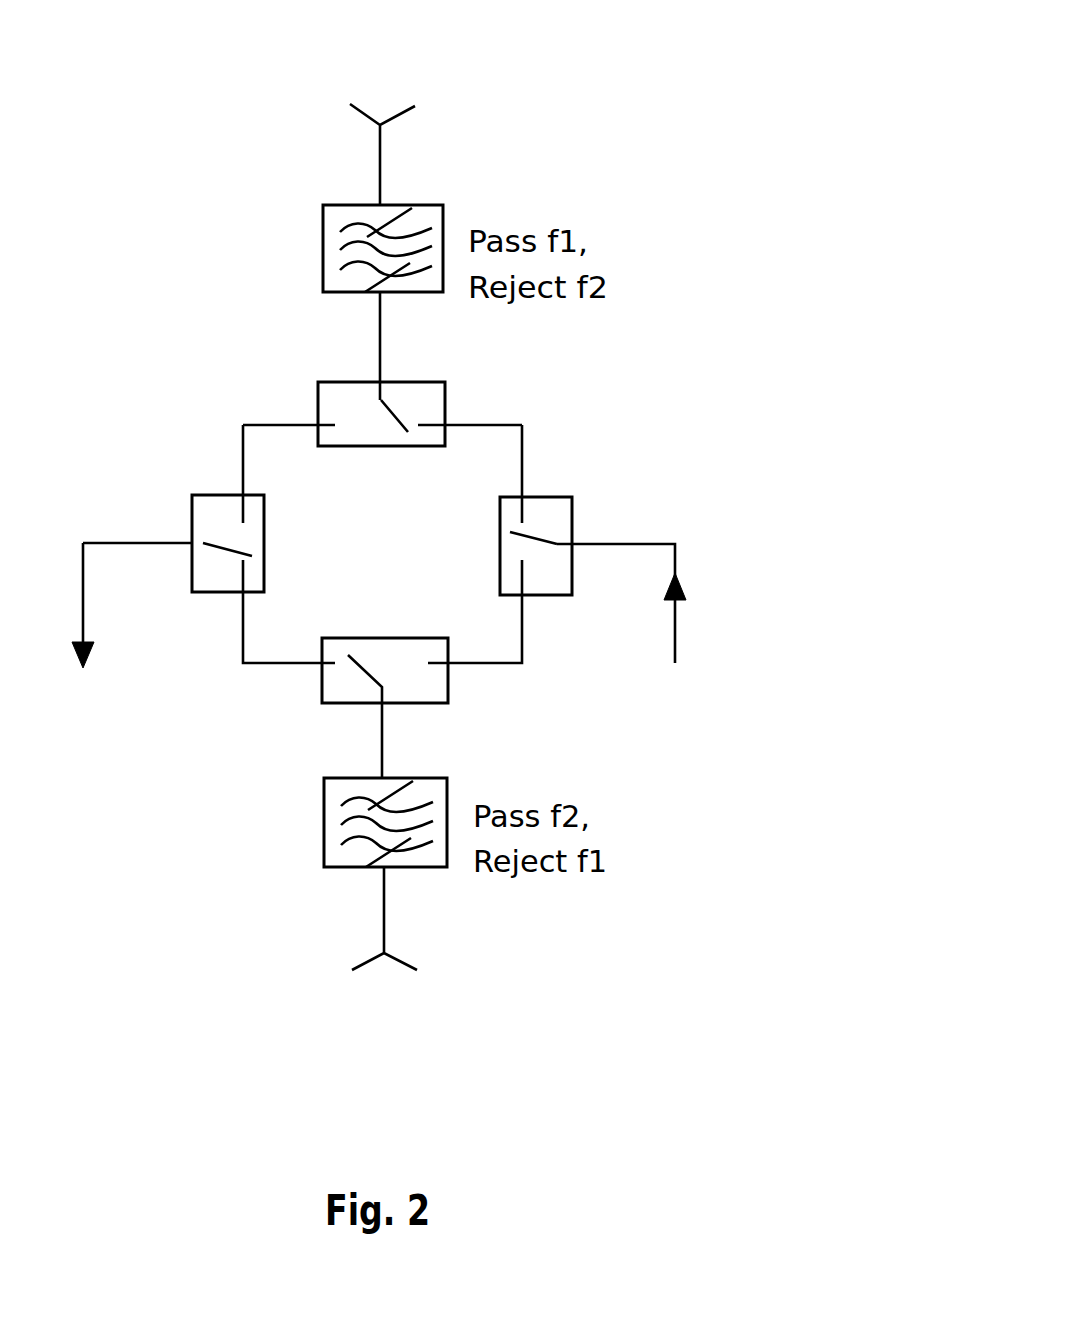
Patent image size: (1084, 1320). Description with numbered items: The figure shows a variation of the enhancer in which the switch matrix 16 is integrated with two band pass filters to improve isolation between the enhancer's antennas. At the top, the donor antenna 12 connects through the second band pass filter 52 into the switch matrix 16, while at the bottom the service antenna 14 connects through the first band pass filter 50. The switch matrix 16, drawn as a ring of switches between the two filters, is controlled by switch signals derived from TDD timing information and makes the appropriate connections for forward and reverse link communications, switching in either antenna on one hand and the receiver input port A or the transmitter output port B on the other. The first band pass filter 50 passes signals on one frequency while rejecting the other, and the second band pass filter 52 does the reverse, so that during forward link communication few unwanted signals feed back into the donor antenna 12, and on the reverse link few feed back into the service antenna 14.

The donor antenna 12 is at (346, 127).
The service antenna 14 is at (503, 1032).
The switch matrix 16 is at (690, 235).
The first band pass filter 50 is at (318, 822).
The second band pass filter 52 is at (318, 249).